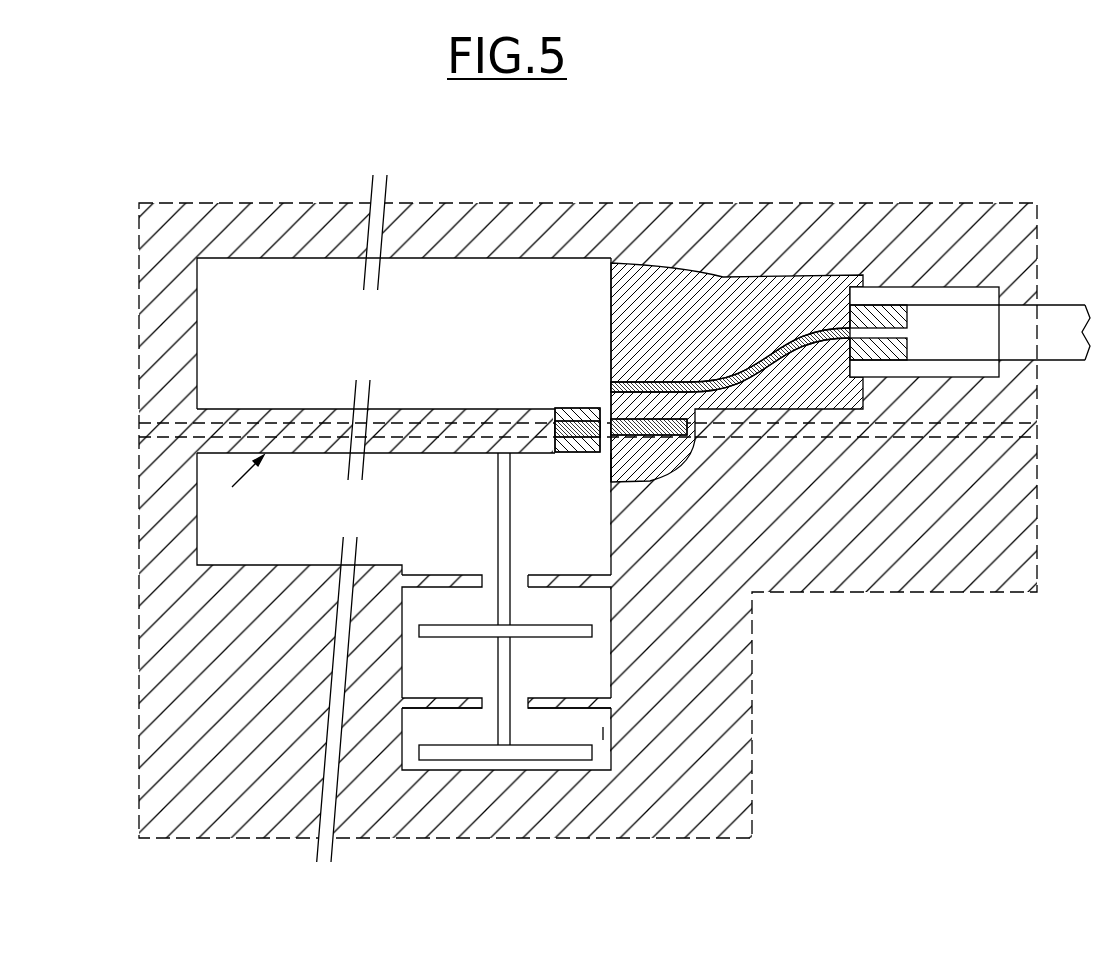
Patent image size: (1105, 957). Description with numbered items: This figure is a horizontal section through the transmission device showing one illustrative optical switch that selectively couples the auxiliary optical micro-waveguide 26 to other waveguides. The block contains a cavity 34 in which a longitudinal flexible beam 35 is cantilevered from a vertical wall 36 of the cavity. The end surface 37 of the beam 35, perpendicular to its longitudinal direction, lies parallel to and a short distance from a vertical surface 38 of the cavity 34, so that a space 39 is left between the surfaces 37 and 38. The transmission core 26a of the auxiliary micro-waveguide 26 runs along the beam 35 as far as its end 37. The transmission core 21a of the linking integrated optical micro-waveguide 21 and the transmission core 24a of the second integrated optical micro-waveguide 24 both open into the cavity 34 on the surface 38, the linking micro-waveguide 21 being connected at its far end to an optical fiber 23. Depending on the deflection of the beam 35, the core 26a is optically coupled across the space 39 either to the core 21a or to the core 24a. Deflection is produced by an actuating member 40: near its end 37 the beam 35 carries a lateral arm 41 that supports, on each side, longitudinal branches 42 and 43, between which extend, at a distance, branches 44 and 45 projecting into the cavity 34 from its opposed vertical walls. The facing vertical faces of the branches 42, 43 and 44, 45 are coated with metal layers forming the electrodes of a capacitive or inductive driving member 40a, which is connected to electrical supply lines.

The linking integrated optical micro-waveguide 21 is at (652, 376).
The transmission core 21a is at (630, 382).
The optical fiber 23 is at (1058, 335).
The second integrated optical micro-waveguide 24 is at (833, 437).
The transmission core 24a is at (656, 432).
The auxiliary optical micro-waveguide 26 is at (190, 422).
The transmission core 26a is at (565, 408).
The cavity 34 is at (237, 302).
The flexible beam 35 is at (236, 409).
The vertical wall 36 is at (222, 492).
The end surface 37 is at (583, 408).
The vertical surface 38 is at (602, 727).
The space 39 is at (603, 420).
The actuating member 40 is at (400, 668).
The driving member 40a is at (477, 720).
The lateral arm 41 is at (505, 520).
The longitudinal branch 42 is at (443, 754).
The longitudinal branch 43 is at (530, 628).
The branch 44 is at (430, 703).
The branch 45 is at (558, 704).